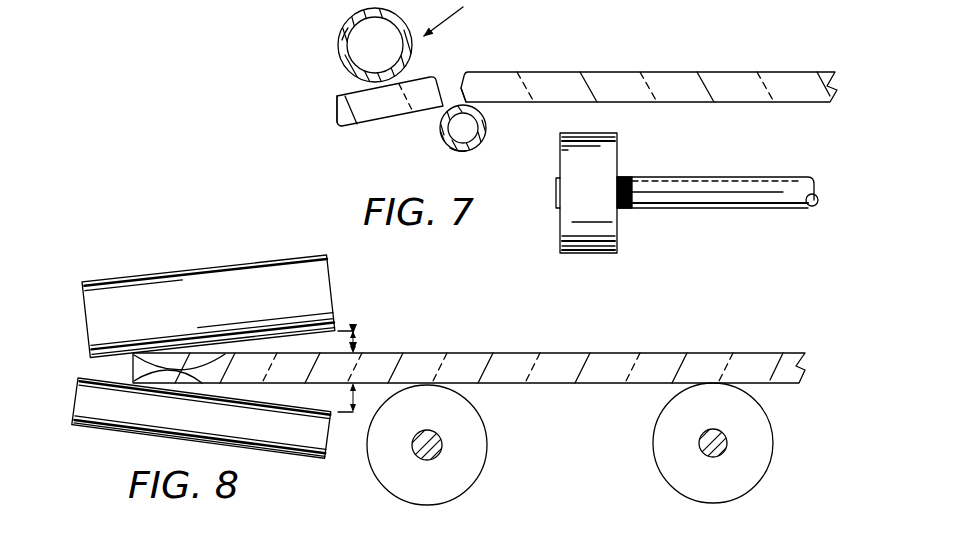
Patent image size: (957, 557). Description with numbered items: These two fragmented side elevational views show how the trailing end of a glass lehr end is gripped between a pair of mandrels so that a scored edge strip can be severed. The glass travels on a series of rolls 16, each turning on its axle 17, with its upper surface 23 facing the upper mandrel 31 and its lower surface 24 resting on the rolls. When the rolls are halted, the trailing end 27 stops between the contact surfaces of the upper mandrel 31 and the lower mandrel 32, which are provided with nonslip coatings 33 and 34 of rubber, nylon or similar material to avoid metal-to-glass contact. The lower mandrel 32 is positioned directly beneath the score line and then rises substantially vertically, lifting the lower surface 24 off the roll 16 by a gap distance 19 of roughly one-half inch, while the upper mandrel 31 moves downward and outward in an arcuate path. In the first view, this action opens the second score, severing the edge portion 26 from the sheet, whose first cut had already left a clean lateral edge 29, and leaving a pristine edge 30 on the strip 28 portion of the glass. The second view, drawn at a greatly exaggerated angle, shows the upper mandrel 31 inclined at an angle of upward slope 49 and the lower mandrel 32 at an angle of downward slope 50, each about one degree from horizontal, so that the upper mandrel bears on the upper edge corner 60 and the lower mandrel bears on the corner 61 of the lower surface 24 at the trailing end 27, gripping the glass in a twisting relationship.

In FIG. 7, the roll 16 is at (558, 214).
In FIG. 8, the roll 16 is at (485, 432).
In FIG. 7, the axle 17 is at (726, 177).
In FIG. 8, the axle 17 is at (435, 458).
In FIG. 7, the gap distance 19 is at (578, 122).
In FIG. 8, the upper surface 23 is at (668, 353).
In FIG. 8, the lower surface 24 is at (563, 385).
In FIG. 7, the edge portion 26 is at (398, 110).
In FIG. 7, the trailing end 27 is at (678, 78).
In FIG. 8, the trailing end 27 is at (130, 376).
In FIG. 8, the strip portion 28 is at (528, 358).
In FIG. 7, the clean lateral edge 29 is at (338, 110).
In FIG. 7, the pristine edge 30 is at (461, 87).
In FIG. 7, the upper mandrel 31 is at (367, 36).
In FIG. 8, the upper mandrel 31 is at (329, 280).
In FIG. 7, the lower mandrel 32 is at (457, 130).
In FIG. 8, the lower mandrel 32 is at (332, 432).
In FIG. 7, the nonslip coating 33 is at (343, 42).
In FIG. 8, the nonslip coating 33 is at (300, 258).
In FIG. 7, the nonslip coating 34 is at (458, 150).
In FIG. 8, the nonslip coating 34 is at (107, 428).
In FIG. 8, the angle of upward slope 49 is at (355, 343).
In FIG. 8, the angle of downward slope 50 is at (354, 397).
In FIG. 8, the upper edge corner 60 is at (217, 353).
In FIG. 8, the corner 61 is at (191, 381).